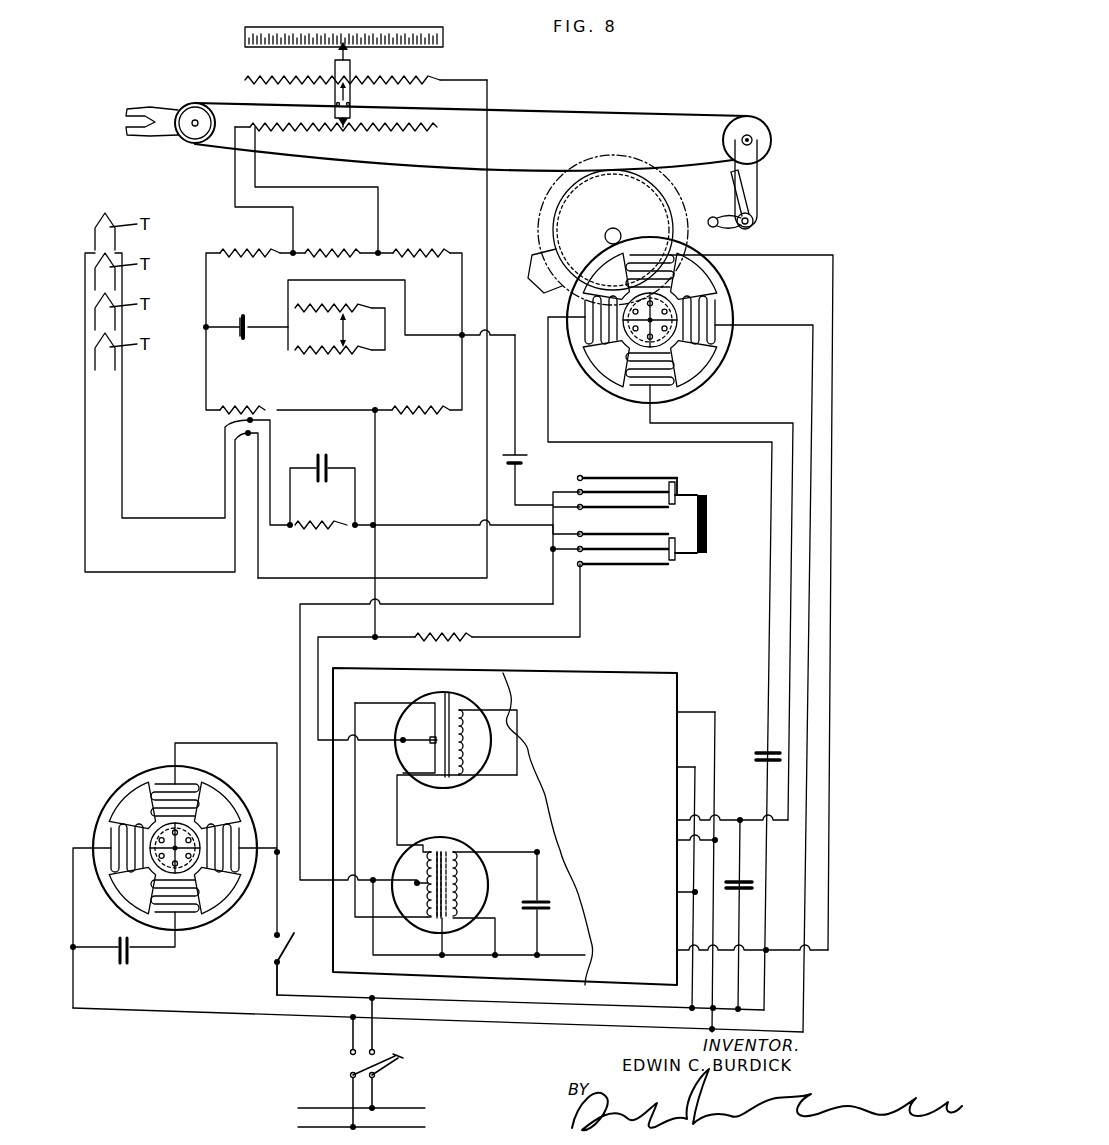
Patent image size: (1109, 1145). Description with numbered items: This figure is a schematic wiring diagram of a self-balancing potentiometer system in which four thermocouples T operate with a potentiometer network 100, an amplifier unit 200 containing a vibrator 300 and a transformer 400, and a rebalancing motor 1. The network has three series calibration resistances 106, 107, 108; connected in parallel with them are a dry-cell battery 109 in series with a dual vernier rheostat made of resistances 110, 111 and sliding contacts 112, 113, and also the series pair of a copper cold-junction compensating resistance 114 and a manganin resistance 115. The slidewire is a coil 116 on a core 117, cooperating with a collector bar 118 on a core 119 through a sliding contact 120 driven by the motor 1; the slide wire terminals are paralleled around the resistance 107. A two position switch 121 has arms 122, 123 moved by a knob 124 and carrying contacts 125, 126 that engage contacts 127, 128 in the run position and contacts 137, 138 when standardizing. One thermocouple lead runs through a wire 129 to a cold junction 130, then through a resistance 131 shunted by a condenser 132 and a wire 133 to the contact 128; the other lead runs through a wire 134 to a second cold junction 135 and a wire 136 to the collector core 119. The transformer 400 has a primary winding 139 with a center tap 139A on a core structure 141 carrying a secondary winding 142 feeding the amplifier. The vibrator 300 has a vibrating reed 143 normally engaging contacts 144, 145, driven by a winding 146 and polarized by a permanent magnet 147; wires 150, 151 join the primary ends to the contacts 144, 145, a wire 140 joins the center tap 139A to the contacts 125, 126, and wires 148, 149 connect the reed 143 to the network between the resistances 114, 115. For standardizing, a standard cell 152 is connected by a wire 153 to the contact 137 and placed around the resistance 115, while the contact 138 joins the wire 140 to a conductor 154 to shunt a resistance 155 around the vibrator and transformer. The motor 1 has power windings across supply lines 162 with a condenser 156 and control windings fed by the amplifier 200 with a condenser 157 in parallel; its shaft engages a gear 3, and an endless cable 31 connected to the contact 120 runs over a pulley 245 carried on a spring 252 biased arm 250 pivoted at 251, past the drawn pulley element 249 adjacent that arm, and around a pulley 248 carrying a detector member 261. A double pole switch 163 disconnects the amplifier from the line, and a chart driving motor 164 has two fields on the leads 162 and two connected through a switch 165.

The motor 1 is at (720, 291).
The gear 3 is at (626, 340).
The endless cable 31 is at (548, 118).
The potentiometer network 100 is at (204, 226).
The resistance 106 is at (258, 249).
The resistance 107 is at (341, 249).
The resistance 108 is at (429, 252).
The battery 109 is at (244, 316).
The resistance 110 is at (336, 307).
The resistance 111 is at (337, 360).
The sliding contact 112 is at (344, 324).
The sliding contact 113 is at (330, 348).
The resistance 114 is at (255, 403).
The resistance 115 is at (425, 405).
The slide wire coil 116 is at (320, 130).
The core 117 is at (386, 130).
The collector bar 118 is at (280, 75).
The core 119 is at (401, 75).
The sliding contact 120 is at (335, 96).
The two position switch 121 is at (672, 580).
The switch arm 122 is at (702, 497).
The switch arm 123 is at (701, 555).
The knob 124 is at (712, 527).
The contact 125 is at (678, 484).
The contact 126 is at (677, 540).
The contact 127 is at (633, 475).
The contact 128 is at (640, 534).
The wire 129 is at (182, 385).
The cold junction 130 is at (240, 421).
The resistance 131 is at (325, 520).
The condenser 132 is at (326, 453).
The wire 133 is at (527, 530).
The wire 134 is at (124, 409).
The cold junction 135 is at (237, 441).
The wire 136 is at (485, 202).
The contact 137 is at (599, 514).
The contact 138 is at (628, 568).
The primary winding 139 is at (425, 850).
The center tap 139A is at (385, 878).
The wire 140 is at (300, 643).
The core structure 141 is at (450, 843).
The secondary winding 142 is at (465, 884).
The vibrating reed 143 is at (400, 742).
The contact 144 is at (432, 737).
The contact 145 is at (432, 744).
The winding 146 is at (467, 742).
The permanent magnet 147 is at (444, 692).
The wire 148 is at (318, 651).
The wire 149 is at (376, 556).
The wire 150 is at (355, 795).
The wire 151 is at (397, 807).
The standard cell 152 is at (527, 456).
The wire 153 is at (523, 466).
The conductor 154 is at (532, 636).
The resistance 155 is at (447, 644).
The condenser 156 is at (752, 757).
The condenser 157 is at (758, 887).
The supply lines 162 is at (534, 1018).
The double pole switch 163 is at (392, 1073).
The chart driving motor 164 is at (128, 784).
The switch 165 is at (286, 950).
The amplifier unit 200 is at (632, 672).
The pulley 245 is at (742, 143).
The pulley 248 is at (192, 101).
The pulley 249 is at (762, 131).
The arm 250 is at (757, 170).
The pivot 251 is at (755, 218).
The spring 252 is at (752, 193).
The detector member 261 is at (150, 135).
The vibrator 300 is at (449, 694).
The transformer 400 is at (433, 842).